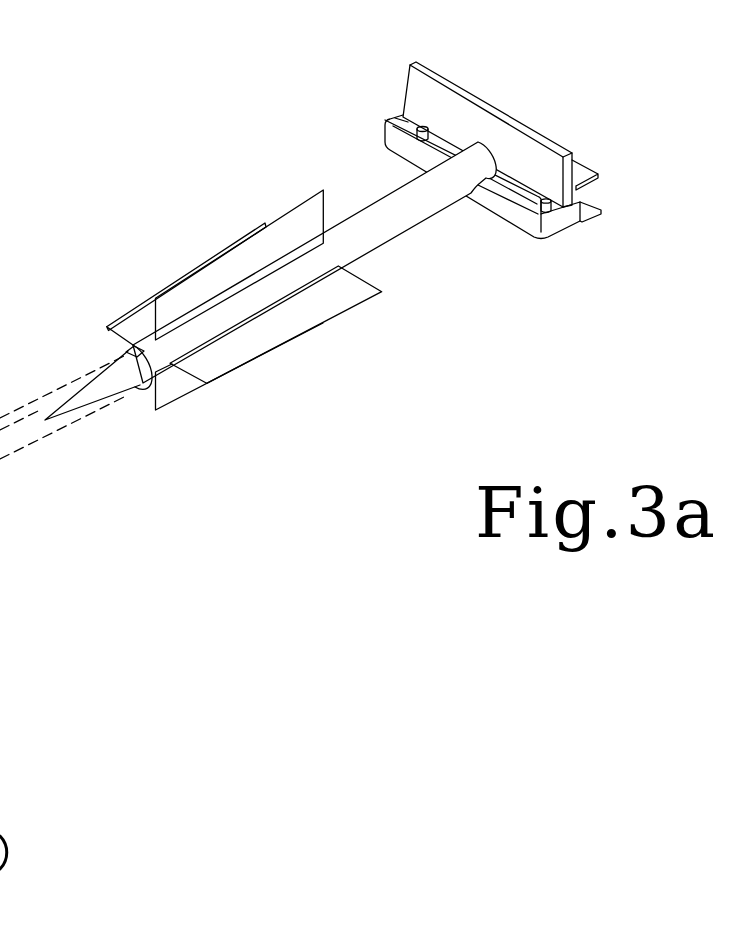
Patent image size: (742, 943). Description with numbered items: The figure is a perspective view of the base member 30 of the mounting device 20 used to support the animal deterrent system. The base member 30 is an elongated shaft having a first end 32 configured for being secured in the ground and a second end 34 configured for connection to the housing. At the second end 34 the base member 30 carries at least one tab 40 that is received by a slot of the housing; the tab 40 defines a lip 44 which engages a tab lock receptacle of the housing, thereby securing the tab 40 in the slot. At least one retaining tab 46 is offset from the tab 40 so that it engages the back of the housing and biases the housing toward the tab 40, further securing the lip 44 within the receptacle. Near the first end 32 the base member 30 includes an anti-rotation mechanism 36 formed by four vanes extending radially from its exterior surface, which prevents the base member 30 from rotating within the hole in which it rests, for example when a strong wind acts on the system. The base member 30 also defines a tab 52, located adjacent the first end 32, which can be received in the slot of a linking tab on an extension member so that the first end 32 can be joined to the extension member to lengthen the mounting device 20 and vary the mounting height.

The mounting device 20 is at (170, 178).
The base member 30 is at (382, 229).
The first end 32 is at (116, 381).
The second end 34 is at (538, 214).
The anti-rotation mechanism 36 is at (333, 298).
The tab 40 is at (580, 160).
The lip 44 is at (592, 188).
The retaining tab 46 is at (600, 212).
The tab 52 is at (142, 353).